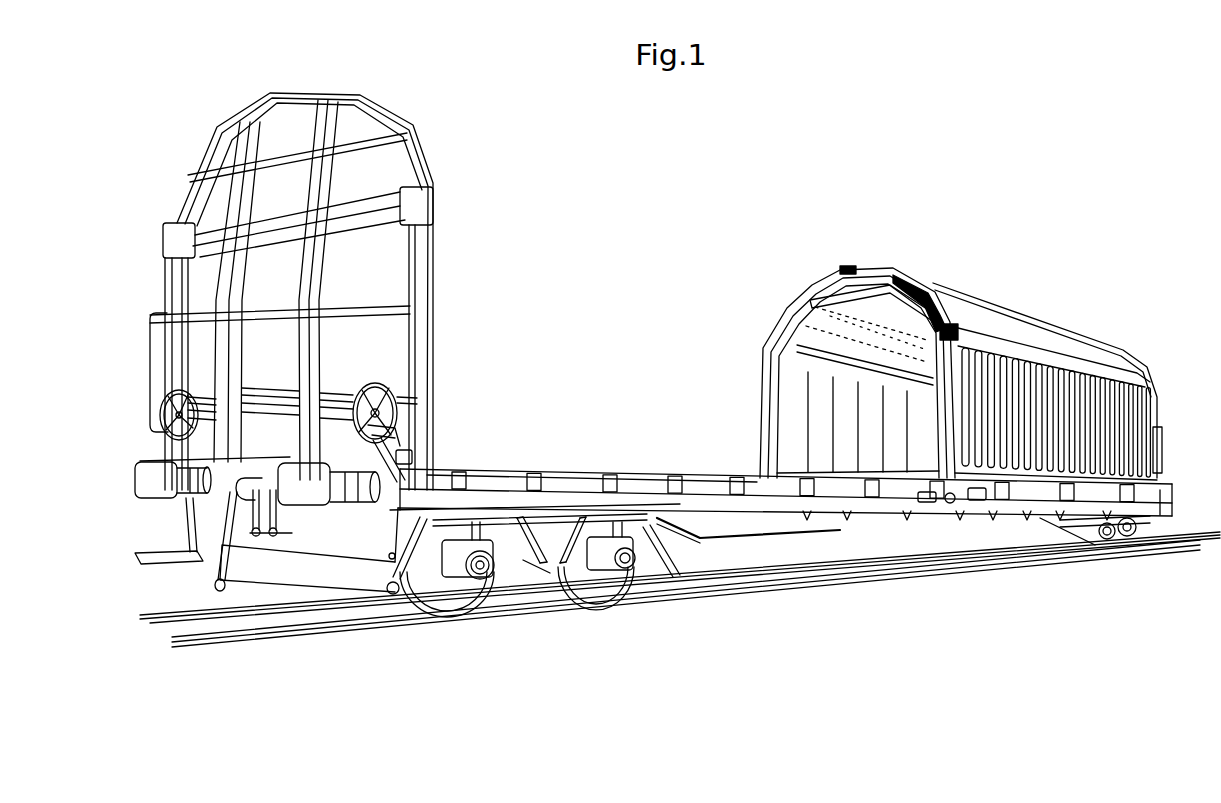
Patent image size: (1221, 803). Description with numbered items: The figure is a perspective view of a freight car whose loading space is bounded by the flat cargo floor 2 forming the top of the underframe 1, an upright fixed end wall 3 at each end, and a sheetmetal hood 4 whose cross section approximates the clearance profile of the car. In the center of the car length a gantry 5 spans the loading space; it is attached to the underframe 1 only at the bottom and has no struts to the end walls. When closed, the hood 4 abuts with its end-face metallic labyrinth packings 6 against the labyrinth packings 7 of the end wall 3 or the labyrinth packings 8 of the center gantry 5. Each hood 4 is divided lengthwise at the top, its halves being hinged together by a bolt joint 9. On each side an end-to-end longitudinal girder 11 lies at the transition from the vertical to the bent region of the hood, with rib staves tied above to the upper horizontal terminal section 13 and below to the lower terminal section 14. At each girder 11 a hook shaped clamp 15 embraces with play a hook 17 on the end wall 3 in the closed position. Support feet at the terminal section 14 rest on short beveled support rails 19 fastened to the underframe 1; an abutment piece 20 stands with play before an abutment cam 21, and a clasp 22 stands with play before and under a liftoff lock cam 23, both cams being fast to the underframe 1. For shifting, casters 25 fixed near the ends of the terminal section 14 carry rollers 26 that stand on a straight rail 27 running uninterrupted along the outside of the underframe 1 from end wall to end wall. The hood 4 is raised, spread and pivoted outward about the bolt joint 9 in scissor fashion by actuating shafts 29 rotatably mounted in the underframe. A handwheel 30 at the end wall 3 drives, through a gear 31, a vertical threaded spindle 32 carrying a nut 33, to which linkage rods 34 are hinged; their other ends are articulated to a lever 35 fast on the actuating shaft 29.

The underframe 1 is at (668, 488).
The cargo floor 2 is at (719, 494).
The end wall 3 is at (263, 367).
The hood 4 is at (1040, 320).
The gantry 5 is at (866, 290).
The metallic labyrinth packing of the hood 6 is at (757, 447).
The metallic labyrinth packing of the end wall 7 is at (445, 560).
The metallic labyrinth packing of the center gantry 8 is at (927, 497).
The bolt joint 9 is at (848, 268).
The longitudinal girder 11 is at (1077, 377).
The upper horizontal terminal section 13 is at (903, 307).
The lower horizontal terminal section 14 is at (1063, 478).
The hook shaped clamp 15 is at (950, 330).
The hook 17 is at (434, 207).
The support rail 19 is at (607, 476).
The abutment piece 20 is at (977, 493).
The abutment cam 21 is at (483, 566).
The clasp 22 is at (1146, 510).
The liftoff lock cam 23 is at (913, 490).
The caster 25 is at (1118, 547).
The roller 26 is at (1103, 537).
The rail 27 is at (950, 500).
The actuating shaft 29 is at (390, 577).
The handwheel 30 is at (352, 462).
The gear 31 is at (378, 470).
The threaded spindle 32 is at (376, 443).
The nut 33 is at (391, 426).
The linkage rod 34 is at (403, 458).
The lever 35 is at (392, 559).